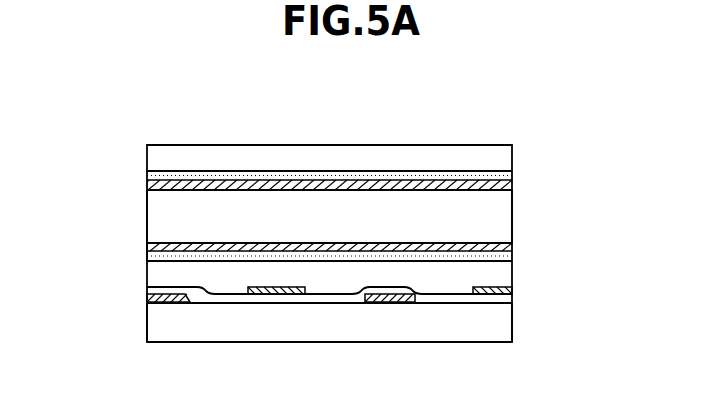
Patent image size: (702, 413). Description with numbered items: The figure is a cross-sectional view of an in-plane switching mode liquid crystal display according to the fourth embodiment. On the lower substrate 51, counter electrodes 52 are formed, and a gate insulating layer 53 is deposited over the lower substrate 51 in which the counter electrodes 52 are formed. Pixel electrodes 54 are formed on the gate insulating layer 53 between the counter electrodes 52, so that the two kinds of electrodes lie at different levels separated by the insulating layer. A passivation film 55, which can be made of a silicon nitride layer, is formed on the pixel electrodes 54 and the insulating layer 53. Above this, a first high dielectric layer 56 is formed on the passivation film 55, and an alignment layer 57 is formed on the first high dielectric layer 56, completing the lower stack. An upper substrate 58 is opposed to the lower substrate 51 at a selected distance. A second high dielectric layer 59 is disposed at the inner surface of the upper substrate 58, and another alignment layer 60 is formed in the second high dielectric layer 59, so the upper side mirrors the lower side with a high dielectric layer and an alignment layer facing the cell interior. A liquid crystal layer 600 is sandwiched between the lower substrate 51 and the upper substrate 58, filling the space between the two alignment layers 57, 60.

The lower substrate 51 is at (500, 334).
The counter electrodes 52 is at (155, 301).
The gate insulating layer 53 is at (500, 302).
The pixel electrodes 54 is at (505, 288).
The passivation film 55 is at (155, 262).
The first high dielectric layer 56 is at (505, 248).
The alignment layer 57 is at (155, 247).
The upper substrate 58 is at (461, 157).
The second high dielectric layer 59 is at (497, 178).
The alignment layer 60 is at (505, 183).
The liquid crystal layer 600 is at (500, 221).